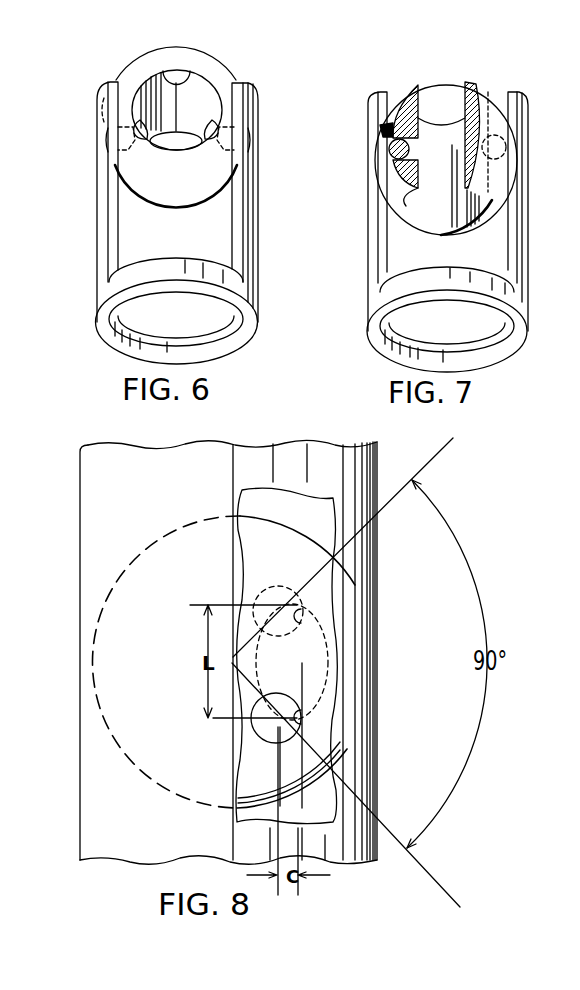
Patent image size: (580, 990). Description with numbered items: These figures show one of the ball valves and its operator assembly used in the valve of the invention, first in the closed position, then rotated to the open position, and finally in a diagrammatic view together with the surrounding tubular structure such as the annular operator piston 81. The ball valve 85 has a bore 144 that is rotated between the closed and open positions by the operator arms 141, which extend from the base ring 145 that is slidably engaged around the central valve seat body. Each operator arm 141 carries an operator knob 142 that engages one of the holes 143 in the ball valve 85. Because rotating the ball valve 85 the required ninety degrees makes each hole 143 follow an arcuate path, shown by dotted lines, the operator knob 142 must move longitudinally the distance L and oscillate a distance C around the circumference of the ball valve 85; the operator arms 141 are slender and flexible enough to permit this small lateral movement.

In FIG. 8, the annular operator piston 81 is at (355, 468).
In FIG. 6, the ball valve 85 is at (230, 63).
In FIG. 7, the ball valve 85 is at (478, 86).
In FIG. 8, the ball valve 85 is at (284, 529).
In FIG. 6, the operator arms 141 is at (102, 212).
In FIG. 7, the operator arms 141 is at (375, 238).
In FIG. 6, the operator knob 142 is at (117, 153).
In FIG. 7, the operator knob 142 is at (385, 148).
In FIG. 6, the operator holes 143 is at (130, 133).
In FIG. 7, the operator holes 143 is at (418, 142).
In FIG. 8, the operator holes 143 is at (292, 621).
In FIG. 6, the bore 144 is at (173, 78).
In FIG. 7, the bore 144 is at (442, 138).
In FIG. 6, the base ring 145 is at (167, 285).
In FIG. 7, the base ring 145 is at (443, 295).